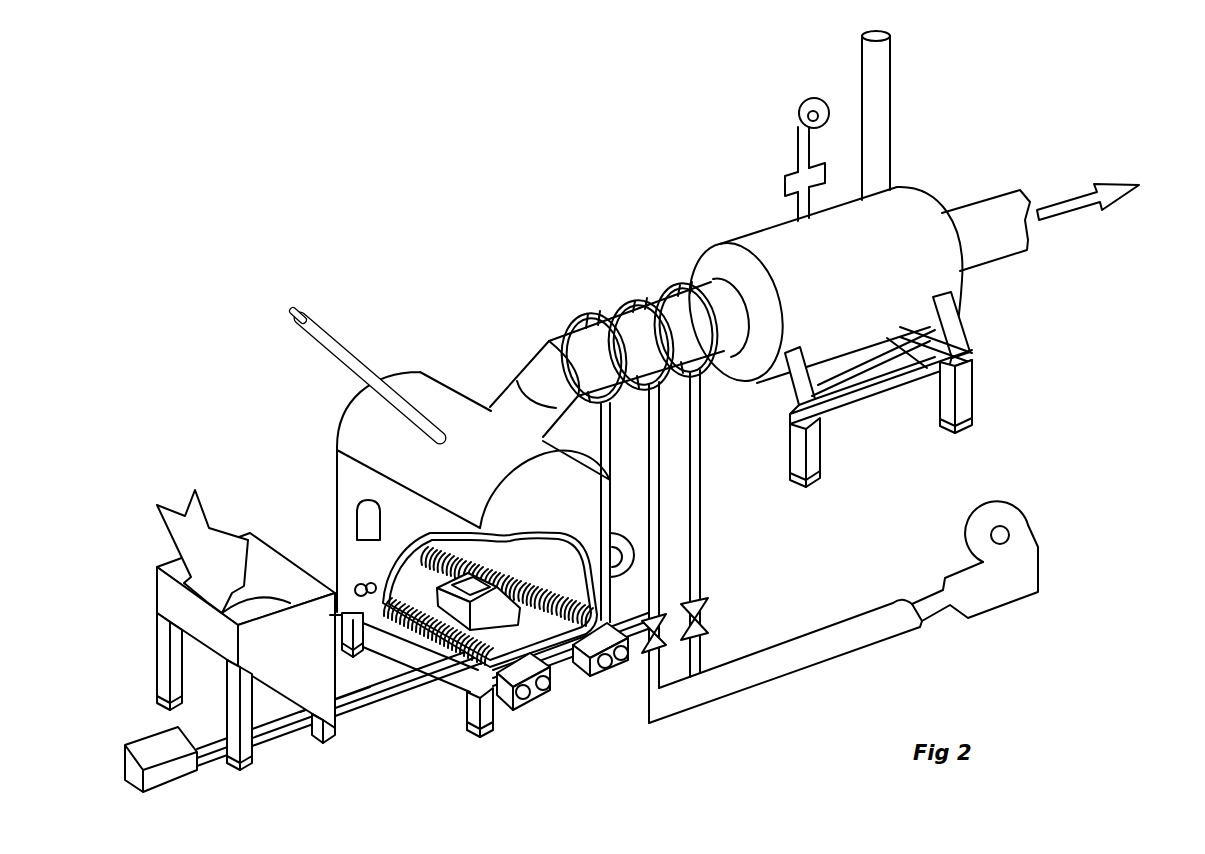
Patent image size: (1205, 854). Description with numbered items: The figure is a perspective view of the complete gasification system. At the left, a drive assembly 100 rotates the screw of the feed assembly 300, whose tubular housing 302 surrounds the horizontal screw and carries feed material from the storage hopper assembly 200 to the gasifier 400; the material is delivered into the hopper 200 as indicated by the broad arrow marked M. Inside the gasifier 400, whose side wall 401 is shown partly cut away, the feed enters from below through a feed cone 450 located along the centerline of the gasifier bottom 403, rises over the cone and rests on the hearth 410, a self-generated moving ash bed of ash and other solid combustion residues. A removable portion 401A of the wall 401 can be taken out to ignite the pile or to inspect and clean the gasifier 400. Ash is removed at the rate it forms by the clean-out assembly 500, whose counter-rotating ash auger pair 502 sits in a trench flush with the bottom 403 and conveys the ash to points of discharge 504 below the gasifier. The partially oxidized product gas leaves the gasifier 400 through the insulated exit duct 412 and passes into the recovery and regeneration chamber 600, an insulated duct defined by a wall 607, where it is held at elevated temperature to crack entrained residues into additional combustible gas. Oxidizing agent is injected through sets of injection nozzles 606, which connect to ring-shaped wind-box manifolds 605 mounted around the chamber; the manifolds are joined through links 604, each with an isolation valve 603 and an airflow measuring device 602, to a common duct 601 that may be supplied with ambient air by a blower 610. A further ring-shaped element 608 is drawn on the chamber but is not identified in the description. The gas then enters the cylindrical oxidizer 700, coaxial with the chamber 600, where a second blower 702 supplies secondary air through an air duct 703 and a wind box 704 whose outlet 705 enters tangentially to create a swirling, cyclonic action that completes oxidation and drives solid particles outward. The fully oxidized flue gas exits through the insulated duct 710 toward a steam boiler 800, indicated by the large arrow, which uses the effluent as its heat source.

The drive assembly 100 is at (132, 807).
The storage hopper assembly 200 is at (300, 655).
The feed assembly 300 is at (291, 746).
The tubular housing 302 is at (369, 697).
The gasifier 400 is at (267, 421).
The wall 401 is at (338, 496).
The removable portion of the wall 401A is at (333, 526).
The bottom 403 is at (393, 642).
The hearth (moving ash bed) 410 is at (351, 337).
The insulated exit duct 412 is at (532, 370).
The feed cone 450 is at (512, 623).
The clean-out assembly 500 is at (562, 693).
The ash auger pair 502 is at (410, 610).
The point of discharge 504 is at (527, 703).
The recovery and regeneration chamber 600 is at (814, 464).
The common duct 601 is at (1000, 595).
The airflow measuring device 602 is at (921, 608).
The isolation valve 603 is at (714, 618).
The link 604 is at (703, 506).
The manifold 605 is at (613, 349).
The injection nozzle 606 is at (563, 316).
The wall 607 is at (690, 338).
The injection ring 608 is at (689, 286).
The blower 610 is at (1015, 533).
The oxidizer 700 is at (853, 257).
The second blower 702 is at (808, 100).
The air duct 703 is at (813, 133).
The wind box 704 is at (780, 183).
The outlet 705 is at (797, 207).
The insulated duct 710 is at (970, 217).
The steam boiler 800 is at (1110, 192).